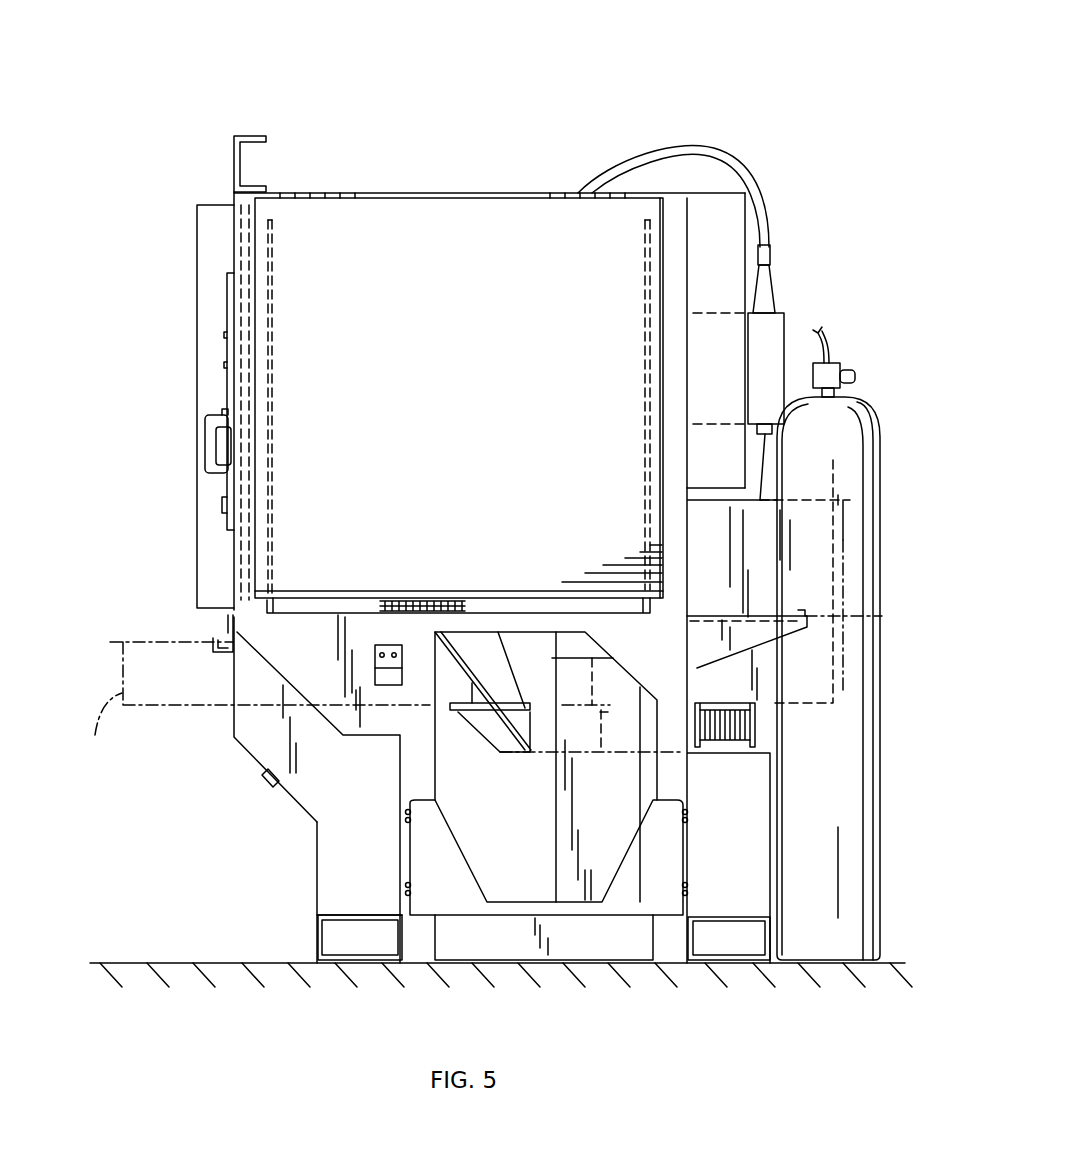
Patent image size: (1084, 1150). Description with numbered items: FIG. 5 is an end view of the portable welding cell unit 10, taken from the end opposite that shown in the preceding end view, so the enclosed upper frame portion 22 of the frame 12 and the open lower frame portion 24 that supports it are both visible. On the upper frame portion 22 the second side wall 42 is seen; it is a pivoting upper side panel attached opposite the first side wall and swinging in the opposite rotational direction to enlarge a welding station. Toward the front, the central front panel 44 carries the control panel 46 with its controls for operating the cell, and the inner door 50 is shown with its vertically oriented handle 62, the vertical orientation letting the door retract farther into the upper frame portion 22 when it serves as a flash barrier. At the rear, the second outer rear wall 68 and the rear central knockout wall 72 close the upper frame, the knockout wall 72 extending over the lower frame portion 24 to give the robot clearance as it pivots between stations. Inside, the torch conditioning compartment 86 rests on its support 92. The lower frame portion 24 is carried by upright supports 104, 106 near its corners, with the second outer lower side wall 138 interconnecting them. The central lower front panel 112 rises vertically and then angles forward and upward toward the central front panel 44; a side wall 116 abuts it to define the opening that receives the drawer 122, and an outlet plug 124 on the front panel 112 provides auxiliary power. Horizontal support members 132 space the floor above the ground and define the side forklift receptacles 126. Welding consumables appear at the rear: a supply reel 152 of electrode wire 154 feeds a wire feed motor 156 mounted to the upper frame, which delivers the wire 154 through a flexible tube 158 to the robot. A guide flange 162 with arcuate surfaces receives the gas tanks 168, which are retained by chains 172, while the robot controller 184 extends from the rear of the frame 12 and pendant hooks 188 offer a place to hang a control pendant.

The portable welding cell unit 10 is at (322, 80).
The frame 12 is at (515, 183).
The upper frame portion 22 is at (172, 229).
The lower frame portion 24 is at (218, 858).
The second side wall 42 is at (450, 227).
The central front panel 44 is at (235, 570).
The control panel 46 is at (227, 353).
The inner door 50 is at (197, 307).
The handles 62 is at (213, 450).
The second outer rear wall 68 is at (690, 257).
The rear central knockout wall 72 is at (747, 230).
The torch conditioning compartment 86 is at (548, 640).
The support 92 is at (558, 793).
The upright support 104 is at (392, 790).
The upright support 106 is at (685, 785).
The central lower front panel 112 is at (317, 878).
The side wall 116 is at (307, 790).
The drawer 122 is at (230, 688).
The outlet plug 124 is at (267, 793).
The side forklift receptacles 126 is at (343, 937).
The horizontal support members 132 is at (317, 918).
The second outer lower side wall 138 is at (640, 905).
The supply reel 152 is at (755, 722).
The welding electrode wire 154 is at (765, 460).
The wire feed motor 156 is at (777, 330).
The flexible tube 158 is at (723, 148).
The guide flange 162 is at (787, 612).
The tanks 168 is at (853, 808).
The chains 172 is at (850, 620).
The controller 184 is at (760, 528).
The pendant hooks 188 is at (225, 653).